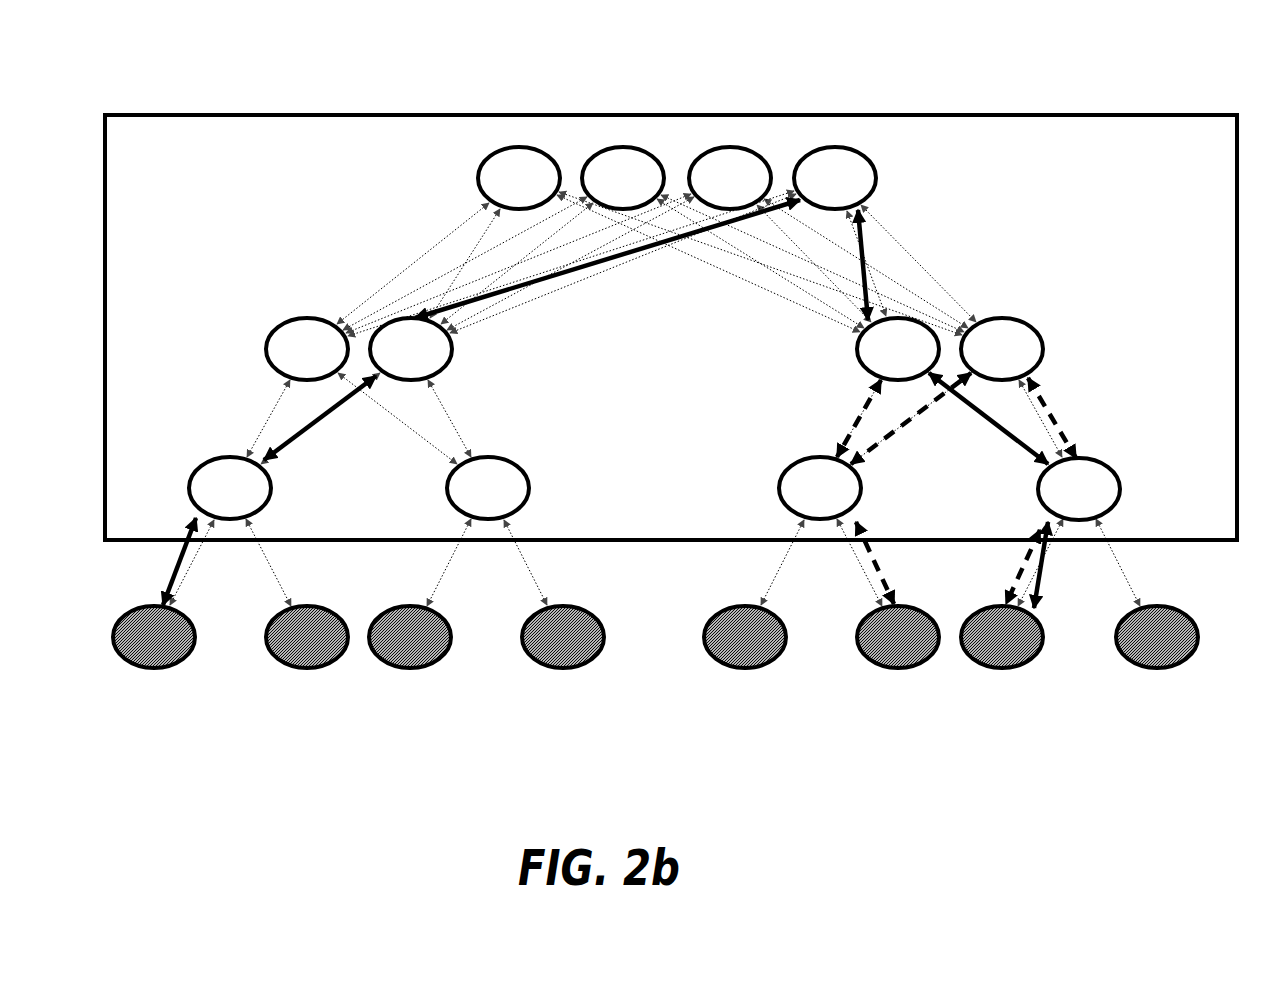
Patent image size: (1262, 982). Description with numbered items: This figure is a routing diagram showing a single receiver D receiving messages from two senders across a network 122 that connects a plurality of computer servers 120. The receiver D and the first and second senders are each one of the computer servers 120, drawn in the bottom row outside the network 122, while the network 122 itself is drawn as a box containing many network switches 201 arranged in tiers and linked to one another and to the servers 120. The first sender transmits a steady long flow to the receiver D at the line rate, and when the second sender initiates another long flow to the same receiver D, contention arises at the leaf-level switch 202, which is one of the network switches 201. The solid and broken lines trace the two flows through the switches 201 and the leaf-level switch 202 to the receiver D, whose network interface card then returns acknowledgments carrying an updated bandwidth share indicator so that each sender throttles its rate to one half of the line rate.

The network 122 is at (622, 115).
The network switch 201 is at (876, 176).
The leaf-level switch 202 is at (1118, 489).
The computer server 120 is at (147, 668).